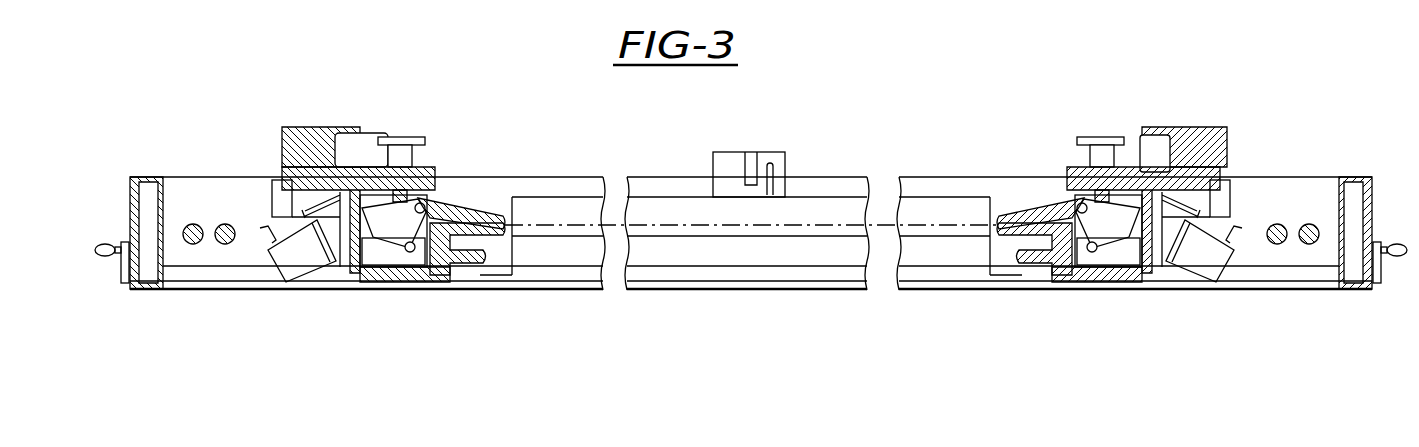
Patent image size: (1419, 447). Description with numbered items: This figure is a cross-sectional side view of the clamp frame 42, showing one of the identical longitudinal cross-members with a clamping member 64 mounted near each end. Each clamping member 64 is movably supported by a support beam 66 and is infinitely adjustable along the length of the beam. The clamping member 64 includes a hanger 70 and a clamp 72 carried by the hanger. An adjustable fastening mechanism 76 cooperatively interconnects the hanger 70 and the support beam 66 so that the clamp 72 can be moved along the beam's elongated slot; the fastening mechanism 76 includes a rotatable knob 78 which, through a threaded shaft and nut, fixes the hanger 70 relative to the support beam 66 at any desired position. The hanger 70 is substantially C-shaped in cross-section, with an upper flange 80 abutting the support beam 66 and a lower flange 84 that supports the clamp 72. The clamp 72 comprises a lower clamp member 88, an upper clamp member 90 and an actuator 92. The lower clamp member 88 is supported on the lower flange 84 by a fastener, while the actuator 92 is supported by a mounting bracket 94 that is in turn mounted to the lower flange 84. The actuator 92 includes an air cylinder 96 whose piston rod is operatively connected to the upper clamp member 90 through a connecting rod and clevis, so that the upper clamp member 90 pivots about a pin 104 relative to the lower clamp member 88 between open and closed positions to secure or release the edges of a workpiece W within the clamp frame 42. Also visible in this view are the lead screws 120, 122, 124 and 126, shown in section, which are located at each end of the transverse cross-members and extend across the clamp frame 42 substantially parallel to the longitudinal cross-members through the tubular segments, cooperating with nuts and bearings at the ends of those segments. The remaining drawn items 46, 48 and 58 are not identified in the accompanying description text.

The clamp frame 42 is at (1293, 120).
The end cap 46 is at (127, 190).
The base rail 48 is at (942, 177).
The stop block 58 is at (832, 197).
The clamping member 64 is at (448, 192).
The support beam 66 is at (312, 127).
The hanger 70 is at (350, 192).
The clamp 72 is at (490, 207).
The adjustable fastening mechanism 76 is at (380, 158).
The rotatable knob 78 is at (408, 136).
The upper flange 80 is at (1062, 176).
The lower flange 84 is at (1130, 277).
The lower clamp member 88 is at (1005, 262).
The upper clamp member 90 is at (1018, 215).
The actuator 92 is at (307, 262).
The mounting bracket 94 is at (1110, 280).
The air cylinder 96 is at (1207, 270).
The pin 104 is at (1082, 280).
The lead screw 120 is at (191, 223).
The lead screw 122 is at (227, 244).
The lead screw 124 is at (1273, 224).
The lead screw 126 is at (1311, 247).
The workpiece W is at (530, 225).